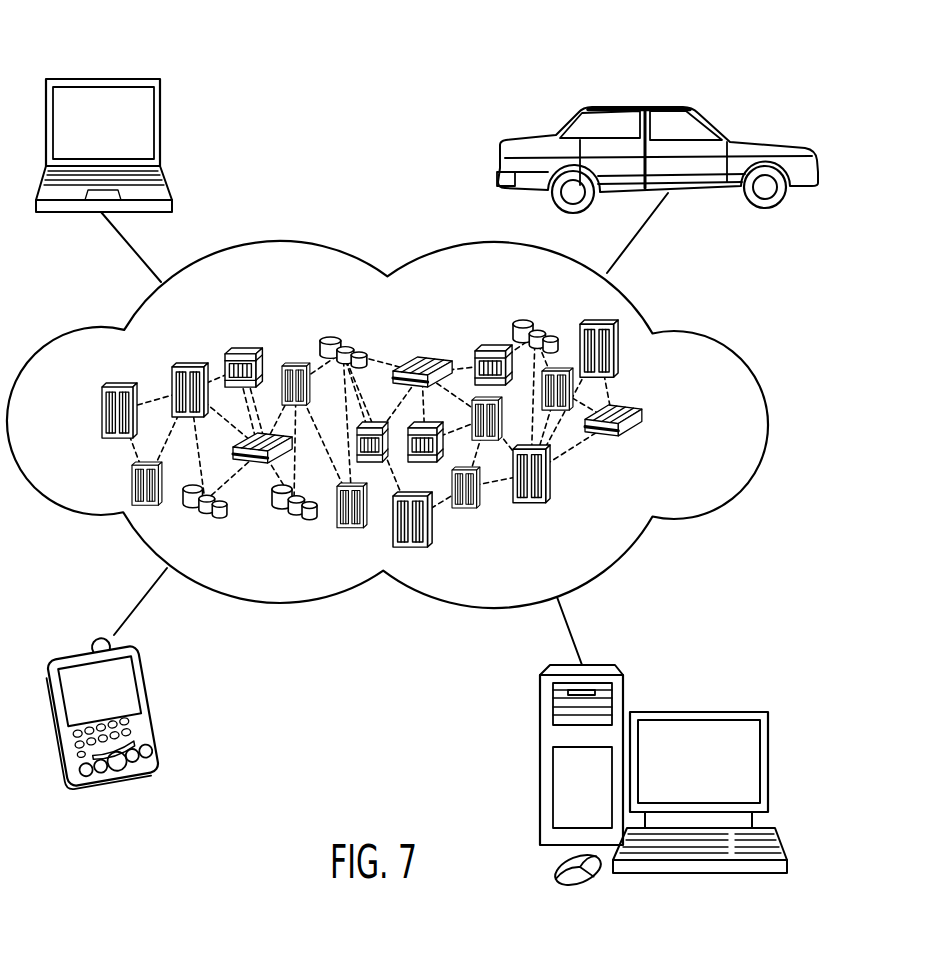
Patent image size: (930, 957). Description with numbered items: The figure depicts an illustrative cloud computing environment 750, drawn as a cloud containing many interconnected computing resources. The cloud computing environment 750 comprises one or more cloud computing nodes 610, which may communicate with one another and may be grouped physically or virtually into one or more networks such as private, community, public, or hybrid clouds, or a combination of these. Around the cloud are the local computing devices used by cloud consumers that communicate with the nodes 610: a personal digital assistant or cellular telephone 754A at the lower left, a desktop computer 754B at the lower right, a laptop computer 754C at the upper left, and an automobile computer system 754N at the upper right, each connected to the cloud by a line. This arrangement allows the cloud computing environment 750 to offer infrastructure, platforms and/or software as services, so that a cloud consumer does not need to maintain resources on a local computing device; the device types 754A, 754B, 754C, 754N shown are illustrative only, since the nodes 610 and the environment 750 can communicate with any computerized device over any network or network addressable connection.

The cloud computing environment 750 is at (710, 335).
The cloud computing node 610 is at (661, 427).
The personal digital assistant (PDA) or cellular telephone 754A is at (83, 648).
The desktop computer 754B is at (698, 710).
The laptop computer 754C is at (104, 78).
The automobile computer system 754N is at (638, 103).